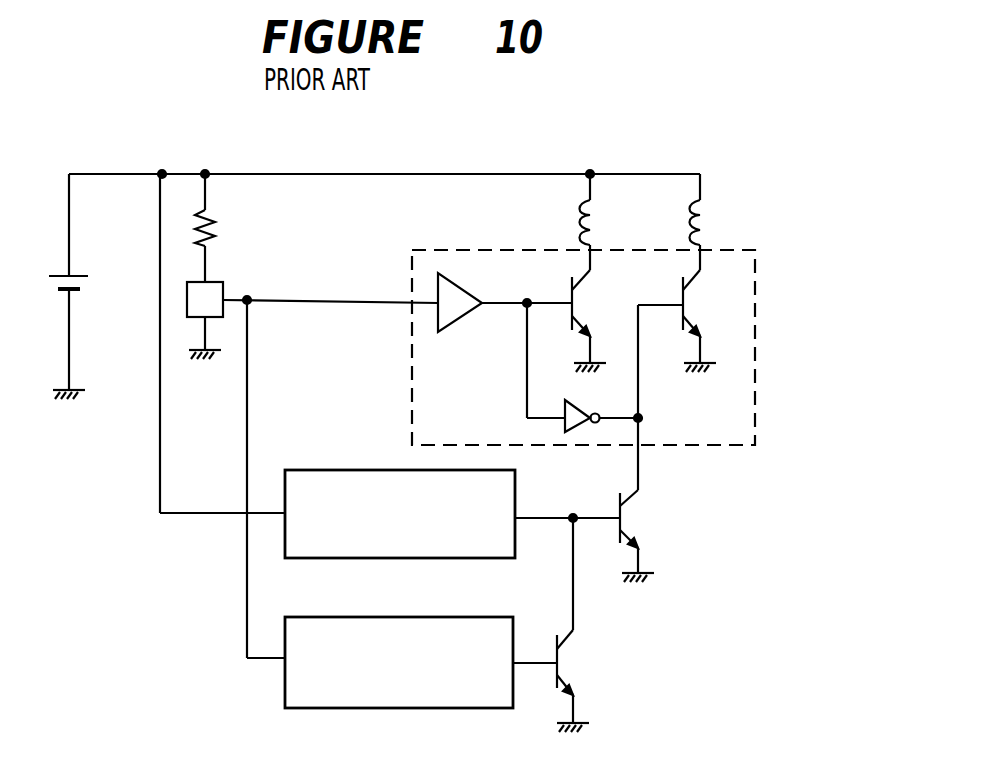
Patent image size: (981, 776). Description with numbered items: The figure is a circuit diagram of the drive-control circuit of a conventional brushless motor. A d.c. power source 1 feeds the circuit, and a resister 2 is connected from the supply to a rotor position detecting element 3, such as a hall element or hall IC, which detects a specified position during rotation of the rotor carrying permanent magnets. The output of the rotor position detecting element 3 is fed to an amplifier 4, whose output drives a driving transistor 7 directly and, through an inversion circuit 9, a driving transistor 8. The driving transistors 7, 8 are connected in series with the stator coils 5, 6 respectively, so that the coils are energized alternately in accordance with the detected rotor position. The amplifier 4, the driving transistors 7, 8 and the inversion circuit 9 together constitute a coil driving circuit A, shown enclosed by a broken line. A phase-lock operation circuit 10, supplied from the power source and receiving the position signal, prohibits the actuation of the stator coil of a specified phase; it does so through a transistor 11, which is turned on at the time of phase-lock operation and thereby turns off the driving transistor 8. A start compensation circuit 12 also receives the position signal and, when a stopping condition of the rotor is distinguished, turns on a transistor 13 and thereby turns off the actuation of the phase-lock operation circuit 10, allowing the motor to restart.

The d.c. power source 1 is at (84, 289).
The resister 2 is at (213, 232).
The rotor position detecting element 3 is at (213, 282).
The amplifier 4 is at (458, 287).
The stator coil 5 is at (598, 226).
The stator coil 6 is at (708, 226).
The driving transistor 7 is at (582, 310).
The driving transistor 8 is at (693, 310).
The inversion circuit 9 is at (578, 406).
The phase-lock operation circuit 10 is at (516, 500).
The transistor 11 is at (630, 522).
The start compensation circuit 12 is at (430, 616).
The transistor 13 is at (567, 665).
The coil driving circuit A is at (757, 350).